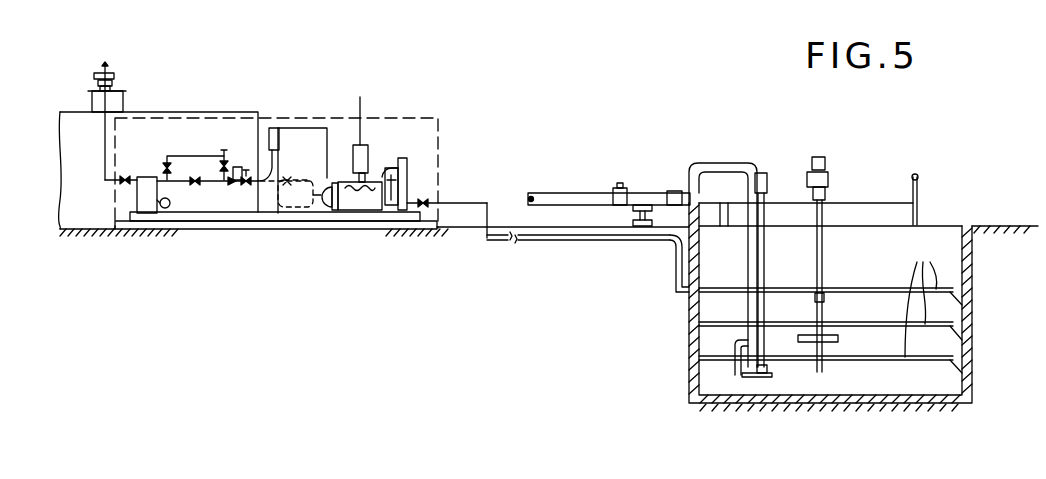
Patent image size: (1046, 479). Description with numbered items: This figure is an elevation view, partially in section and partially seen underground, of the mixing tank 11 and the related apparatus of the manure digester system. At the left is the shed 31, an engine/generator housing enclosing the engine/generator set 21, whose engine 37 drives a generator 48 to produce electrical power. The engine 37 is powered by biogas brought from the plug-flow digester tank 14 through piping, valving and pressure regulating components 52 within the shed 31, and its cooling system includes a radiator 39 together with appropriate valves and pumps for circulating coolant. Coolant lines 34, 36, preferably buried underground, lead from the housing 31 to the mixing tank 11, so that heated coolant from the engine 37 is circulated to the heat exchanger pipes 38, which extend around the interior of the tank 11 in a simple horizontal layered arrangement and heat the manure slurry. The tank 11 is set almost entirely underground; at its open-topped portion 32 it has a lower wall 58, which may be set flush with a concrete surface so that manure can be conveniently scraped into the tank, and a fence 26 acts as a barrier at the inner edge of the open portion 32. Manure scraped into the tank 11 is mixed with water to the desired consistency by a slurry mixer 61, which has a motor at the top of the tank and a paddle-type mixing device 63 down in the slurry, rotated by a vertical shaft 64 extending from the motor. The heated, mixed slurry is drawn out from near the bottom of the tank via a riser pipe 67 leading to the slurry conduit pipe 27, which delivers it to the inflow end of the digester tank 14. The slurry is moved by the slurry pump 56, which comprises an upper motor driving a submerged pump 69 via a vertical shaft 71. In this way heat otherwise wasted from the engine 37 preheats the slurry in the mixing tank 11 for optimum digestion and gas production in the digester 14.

The mixing tank 11 is at (932, 190).
The plug-flow digester tank 14 is at (212, 106).
The engine/generator set 21 is at (374, 160).
The fence 26 is at (915, 174).
The pipe 27 is at (572, 194).
The shed 31 is at (427, 117).
The open-topped portion 32 is at (943, 216).
The coolant line 34 is at (482, 200).
The coolant line 36 is at (482, 203).
The engine 37 is at (345, 180).
The heat exchanger pipes 38 is at (921, 296).
The radiator 39 is at (407, 173).
The generator 48 is at (300, 207).
The piping, valving and pressure regulating components 52 is at (196, 146).
The slurry pump 56 is at (768, 170).
The lower wall 58 is at (968, 247).
The slurry mixer 61 is at (832, 161).
The paddle-type mixing device 63 is at (828, 335).
The vertical shaft 64 is at (822, 253).
The riser pipe 67 is at (748, 250).
The submerged pump 69 is at (772, 370).
The vertical shaft 71 is at (765, 249).